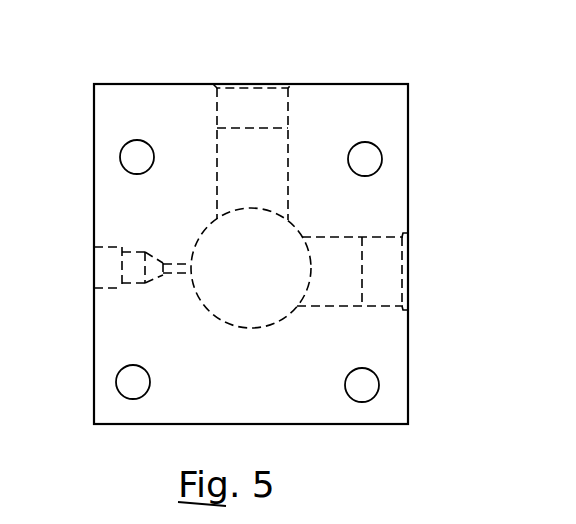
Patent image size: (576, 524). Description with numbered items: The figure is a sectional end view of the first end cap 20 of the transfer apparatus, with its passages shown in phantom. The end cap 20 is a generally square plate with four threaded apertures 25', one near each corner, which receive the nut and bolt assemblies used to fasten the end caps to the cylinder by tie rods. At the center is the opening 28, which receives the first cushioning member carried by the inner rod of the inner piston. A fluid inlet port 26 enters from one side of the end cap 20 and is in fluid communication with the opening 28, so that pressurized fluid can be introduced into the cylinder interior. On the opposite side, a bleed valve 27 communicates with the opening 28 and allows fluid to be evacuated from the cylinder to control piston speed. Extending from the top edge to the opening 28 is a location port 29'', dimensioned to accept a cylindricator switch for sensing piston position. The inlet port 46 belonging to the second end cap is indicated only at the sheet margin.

The first end cap 20 is at (166, 100).
The threaded apertures 25' is at (208, 291).
The fluid inlet port 26 is at (387, 263).
The bleed valve 27 is at (103, 269).
The opening 28 is at (280, 242).
The location port 29'' is at (246, 117).
The inlet port 46 is at (0, 22).